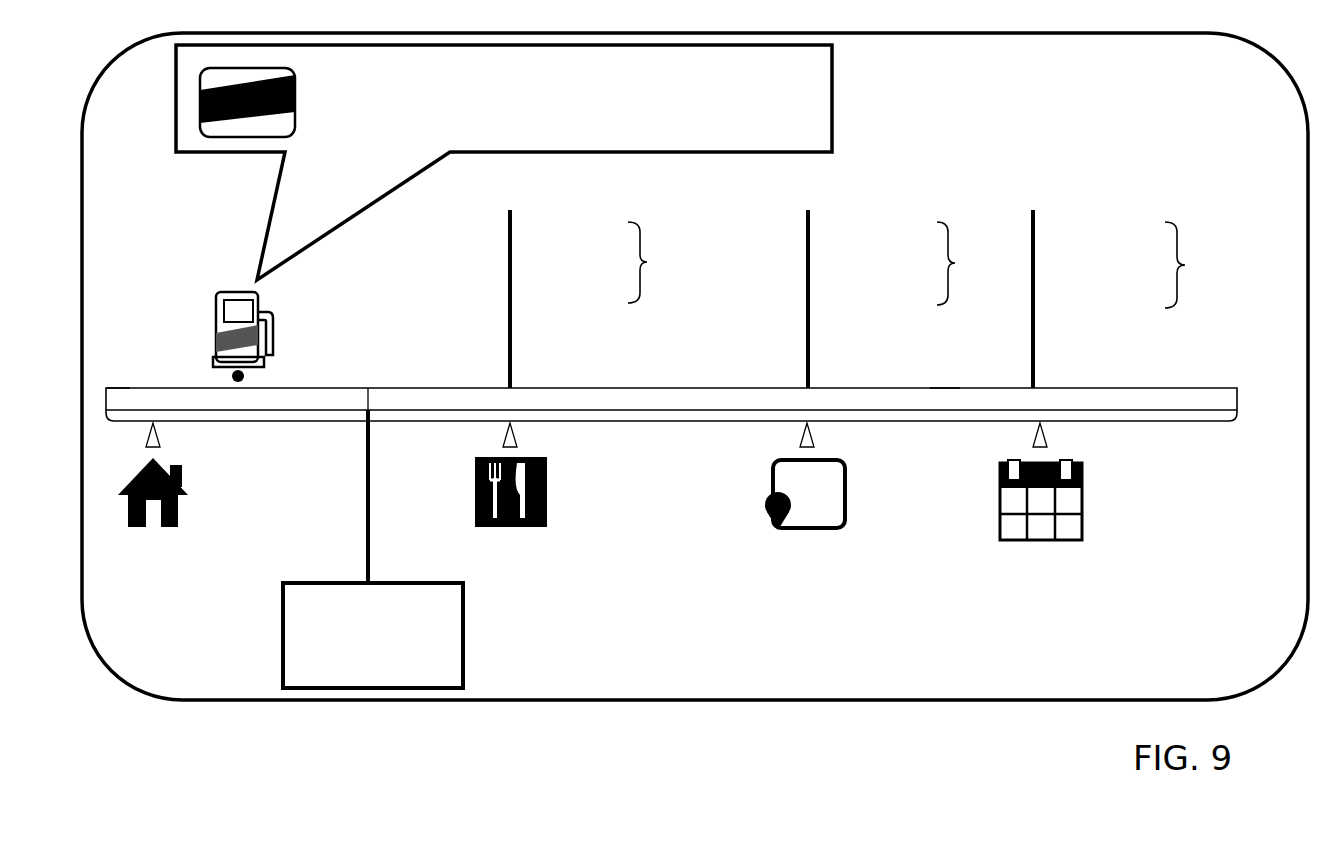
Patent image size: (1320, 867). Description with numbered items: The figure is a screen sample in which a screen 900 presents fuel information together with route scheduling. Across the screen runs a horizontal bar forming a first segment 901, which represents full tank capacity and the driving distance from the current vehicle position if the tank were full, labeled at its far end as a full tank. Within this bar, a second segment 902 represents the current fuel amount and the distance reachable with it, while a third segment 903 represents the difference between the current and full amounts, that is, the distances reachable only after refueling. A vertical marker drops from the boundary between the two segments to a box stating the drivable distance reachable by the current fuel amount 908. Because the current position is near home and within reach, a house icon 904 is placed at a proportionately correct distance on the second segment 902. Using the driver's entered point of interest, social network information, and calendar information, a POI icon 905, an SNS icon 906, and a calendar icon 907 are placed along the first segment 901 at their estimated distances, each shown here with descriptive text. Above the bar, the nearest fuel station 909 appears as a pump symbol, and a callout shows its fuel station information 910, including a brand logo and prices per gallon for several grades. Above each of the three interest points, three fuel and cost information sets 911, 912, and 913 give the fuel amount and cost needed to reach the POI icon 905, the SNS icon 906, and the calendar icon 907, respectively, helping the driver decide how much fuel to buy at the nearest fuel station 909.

The screen 900 is at (153, 700).
The first segment 901 is at (670, 421).
The second segment 902 is at (152, 386).
The third segment 903 is at (945, 387).
The house icon 904 is at (138, 527).
The POI icon 905 is at (475, 487).
The SNS icon 906 is at (845, 492).
The calendar icon 907 is at (1082, 492).
The current fuel amount 908 is at (463, 620).
The nearest fuel station 909 is at (273, 330).
The fuel station information 910 is at (832, 103).
The fuel and cost information set 911 is at (601, 299).
The fuel and cost information set 912 is at (908, 299).
The fuel and cost information set 913 is at (1137, 299).